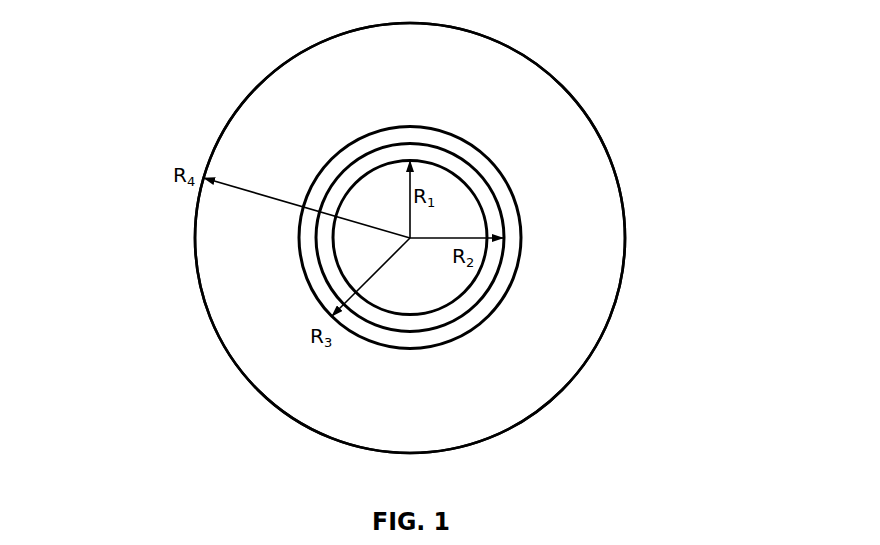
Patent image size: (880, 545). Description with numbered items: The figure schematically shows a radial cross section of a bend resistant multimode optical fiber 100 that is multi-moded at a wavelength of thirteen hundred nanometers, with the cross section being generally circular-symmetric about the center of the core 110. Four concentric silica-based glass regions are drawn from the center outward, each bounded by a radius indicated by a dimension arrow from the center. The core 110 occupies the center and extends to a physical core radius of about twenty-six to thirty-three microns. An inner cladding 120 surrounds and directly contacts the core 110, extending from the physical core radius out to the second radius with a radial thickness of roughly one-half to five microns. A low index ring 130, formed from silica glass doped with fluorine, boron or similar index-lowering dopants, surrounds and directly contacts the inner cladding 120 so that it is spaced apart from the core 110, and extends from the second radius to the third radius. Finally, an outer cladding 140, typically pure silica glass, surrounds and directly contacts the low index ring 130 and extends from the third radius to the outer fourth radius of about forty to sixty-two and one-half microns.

The optical fiber 100 is at (643, 127).
The core 110 is at (467, 293).
The inner cladding 120 is at (346, 163).
The low index ring 130 is at (423, 352).
The outer cladding 140 is at (203, 310).